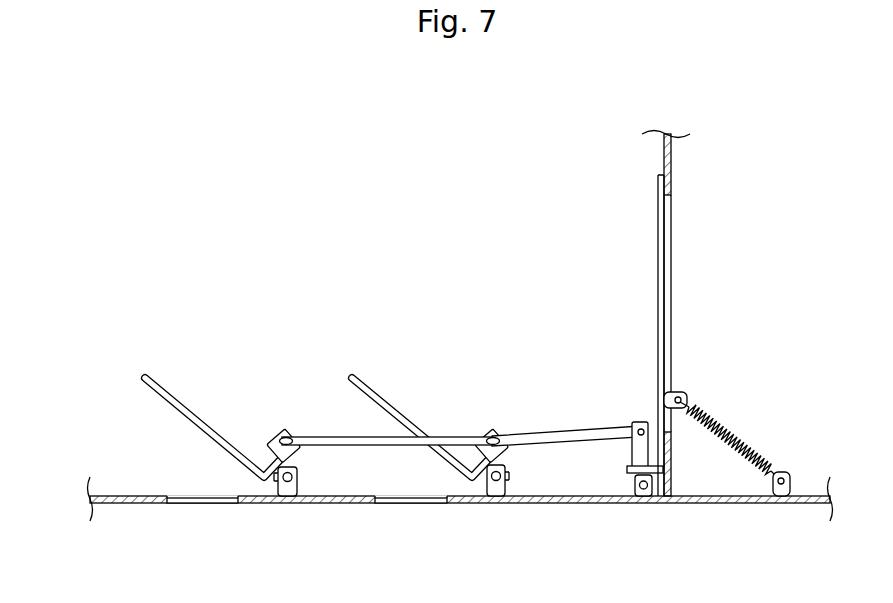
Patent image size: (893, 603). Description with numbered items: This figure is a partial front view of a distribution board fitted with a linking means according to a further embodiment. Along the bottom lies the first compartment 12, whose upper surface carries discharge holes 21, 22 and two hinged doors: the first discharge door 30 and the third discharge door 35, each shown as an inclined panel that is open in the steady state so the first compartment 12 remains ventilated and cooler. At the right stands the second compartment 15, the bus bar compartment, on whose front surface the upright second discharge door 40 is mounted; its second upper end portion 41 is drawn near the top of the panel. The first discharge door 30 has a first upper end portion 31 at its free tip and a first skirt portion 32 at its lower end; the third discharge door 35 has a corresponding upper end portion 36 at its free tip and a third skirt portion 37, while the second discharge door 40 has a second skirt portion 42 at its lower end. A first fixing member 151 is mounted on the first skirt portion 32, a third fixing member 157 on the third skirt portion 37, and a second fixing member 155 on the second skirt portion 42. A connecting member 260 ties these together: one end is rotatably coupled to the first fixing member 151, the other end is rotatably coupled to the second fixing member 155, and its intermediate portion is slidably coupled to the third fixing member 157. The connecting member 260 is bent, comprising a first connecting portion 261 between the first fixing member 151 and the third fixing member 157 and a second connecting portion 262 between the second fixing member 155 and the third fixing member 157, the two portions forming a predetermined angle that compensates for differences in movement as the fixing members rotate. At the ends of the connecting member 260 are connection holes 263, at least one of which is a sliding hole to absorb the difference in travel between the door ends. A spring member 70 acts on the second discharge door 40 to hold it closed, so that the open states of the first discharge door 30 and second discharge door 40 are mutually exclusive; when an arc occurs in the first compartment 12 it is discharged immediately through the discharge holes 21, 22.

The first compartment 12 is at (598, 503).
The second compartment 15 is at (672, 160).
The discharge hole 21 is at (172, 503).
The discharge hole 22 is at (380, 503).
The first discharge door 30 is at (213, 394).
The first upper end portion 31 is at (166, 375).
The first skirt portion 32 is at (276, 496).
The third discharge door 35 is at (420, 395).
The second stopper arm 36 is at (374, 388).
The third skirt portion 37 is at (487, 496).
The second discharge door 40 is at (644, 314).
The second upper end portion 41 is at (658, 222).
The second skirt portion 42 is at (654, 496).
The spring member 70 is at (738, 436).
The first fixing member 151 is at (283, 432).
The second fixing member 155 is at (645, 422).
The third fixing member 157 is at (488, 432).
The connecting member 260 is at (450, 448).
The first connecting portion 261 is at (338, 446).
The second connecting portion 262 is at (549, 446).
The connection hole 263 is at (290, 433).